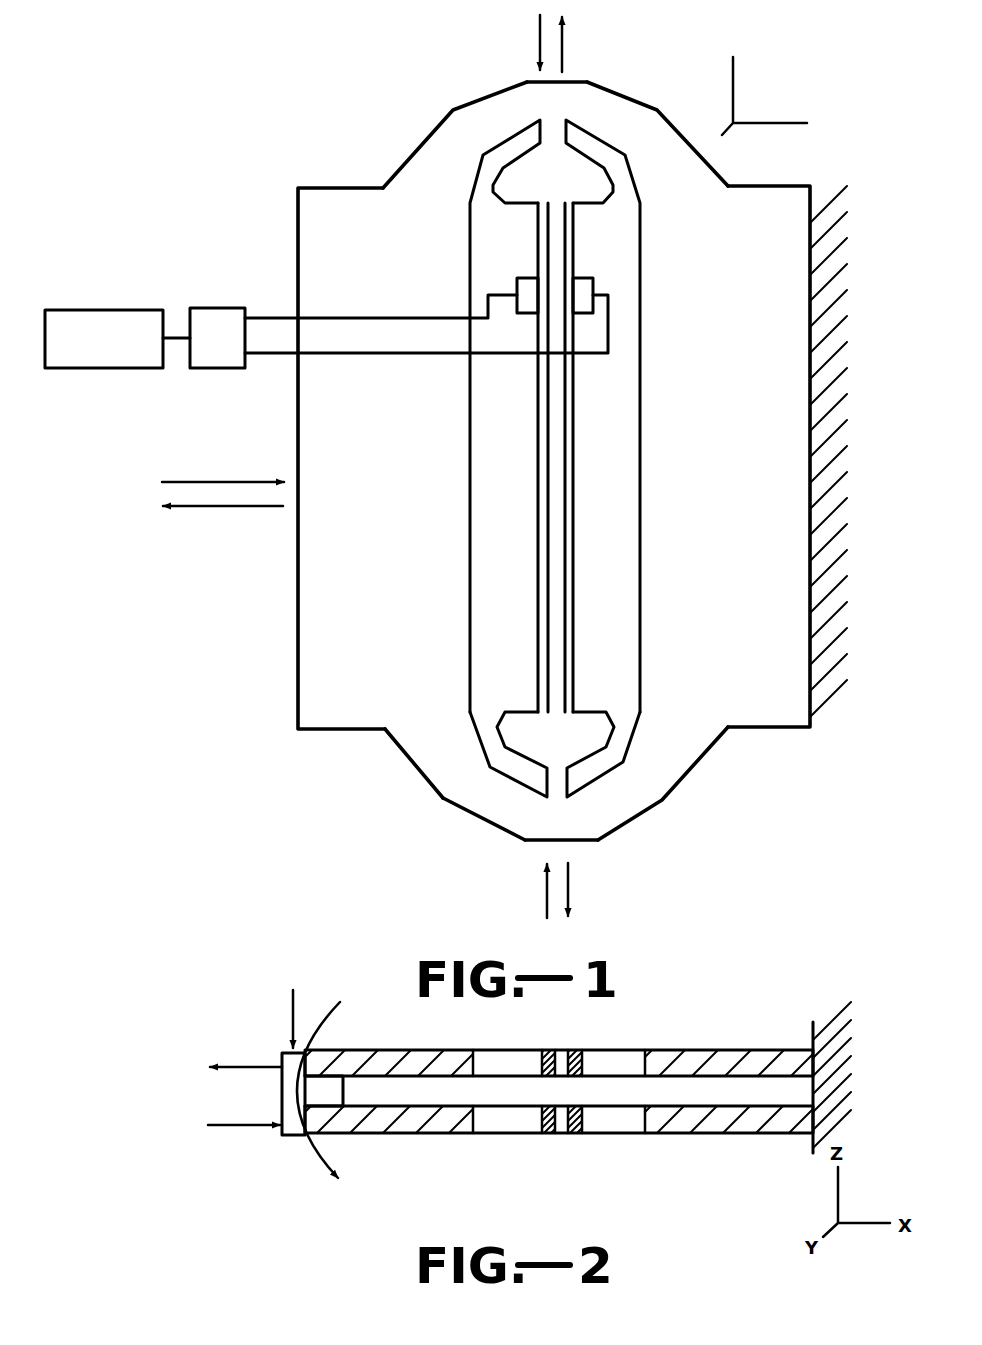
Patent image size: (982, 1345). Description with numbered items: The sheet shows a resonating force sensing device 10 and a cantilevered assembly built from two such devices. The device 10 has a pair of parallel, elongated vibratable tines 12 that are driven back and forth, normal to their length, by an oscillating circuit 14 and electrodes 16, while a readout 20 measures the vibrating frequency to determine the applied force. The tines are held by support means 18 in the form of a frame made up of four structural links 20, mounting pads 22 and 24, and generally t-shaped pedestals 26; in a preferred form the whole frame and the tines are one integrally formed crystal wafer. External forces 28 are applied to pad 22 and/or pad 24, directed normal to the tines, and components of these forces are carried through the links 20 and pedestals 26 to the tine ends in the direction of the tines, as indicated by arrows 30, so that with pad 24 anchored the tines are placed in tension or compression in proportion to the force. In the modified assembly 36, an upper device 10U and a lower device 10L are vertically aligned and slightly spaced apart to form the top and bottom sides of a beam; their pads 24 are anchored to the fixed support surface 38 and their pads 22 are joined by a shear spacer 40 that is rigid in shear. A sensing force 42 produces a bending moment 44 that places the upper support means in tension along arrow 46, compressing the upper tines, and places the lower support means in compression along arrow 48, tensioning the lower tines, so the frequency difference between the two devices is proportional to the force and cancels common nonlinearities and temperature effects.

In FIG. 1, the force sensing device 10 is at (218, 745).
In FIG. 1, the vibratable tines 12 is at (540, 512).
In FIG. 1, the oscillating circuit 14 is at (220, 308).
In FIG. 1, the electrodes 16 is at (520, 277).
In FIG. 1, the support means 18 is at (368, 737).
In FIG. 1, the structural links 20 is at (443, 147).
In FIG. 1, the mounting pad 22 is at (333, 618).
In FIG. 1, the mounting pad 24 is at (793, 612).
In FIG. 1, the t-shaped pedestals 26 is at (580, 180).
In FIG. 1, the external forces 28 is at (227, 480).
In FIG. 1, the internal force arrows 30 is at (537, 47).
In FIG. 2, the upper force sensing device 10U is at (677, 1043).
In FIG. 2, the lower force sensing device 10L is at (687, 1134).
In FIG. 2, the force sensing assembly 36 is at (341, 1195).
In FIG. 2, the support surface 38 is at (835, 1058).
In FIG. 2, the shear spacer 40 is at (285, 1082).
In FIG. 2, the sensing force 42 is at (290, 1012).
In FIG. 2, the bending moment 44 is at (315, 1157).
In FIG. 2, the tension arrow 46 is at (237, 1067).
In FIG. 2, the compression arrow 48 is at (233, 1127).